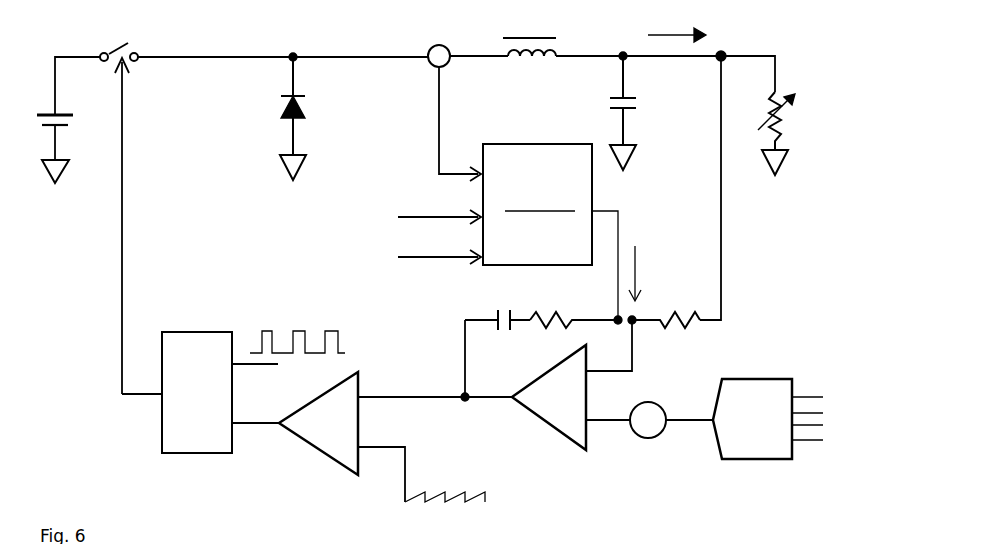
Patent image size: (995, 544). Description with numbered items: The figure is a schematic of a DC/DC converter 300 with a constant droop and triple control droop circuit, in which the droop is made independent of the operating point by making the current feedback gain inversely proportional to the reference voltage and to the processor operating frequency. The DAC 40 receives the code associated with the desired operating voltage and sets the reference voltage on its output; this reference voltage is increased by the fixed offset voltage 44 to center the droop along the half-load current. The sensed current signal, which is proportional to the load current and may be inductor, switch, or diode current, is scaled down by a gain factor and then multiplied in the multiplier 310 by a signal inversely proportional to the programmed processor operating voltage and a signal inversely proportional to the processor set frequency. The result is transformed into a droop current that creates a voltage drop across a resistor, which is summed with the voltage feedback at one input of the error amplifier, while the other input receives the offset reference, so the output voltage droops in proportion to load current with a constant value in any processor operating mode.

The converter 300 is at (428, 276).
The multiplier 310 is at (600, 197).
The offset voltage 44 is at (660, 468).
The DAC 40 is at (752, 468).